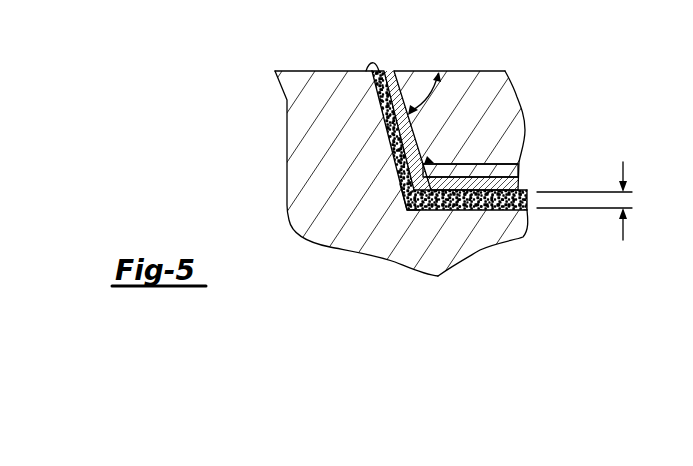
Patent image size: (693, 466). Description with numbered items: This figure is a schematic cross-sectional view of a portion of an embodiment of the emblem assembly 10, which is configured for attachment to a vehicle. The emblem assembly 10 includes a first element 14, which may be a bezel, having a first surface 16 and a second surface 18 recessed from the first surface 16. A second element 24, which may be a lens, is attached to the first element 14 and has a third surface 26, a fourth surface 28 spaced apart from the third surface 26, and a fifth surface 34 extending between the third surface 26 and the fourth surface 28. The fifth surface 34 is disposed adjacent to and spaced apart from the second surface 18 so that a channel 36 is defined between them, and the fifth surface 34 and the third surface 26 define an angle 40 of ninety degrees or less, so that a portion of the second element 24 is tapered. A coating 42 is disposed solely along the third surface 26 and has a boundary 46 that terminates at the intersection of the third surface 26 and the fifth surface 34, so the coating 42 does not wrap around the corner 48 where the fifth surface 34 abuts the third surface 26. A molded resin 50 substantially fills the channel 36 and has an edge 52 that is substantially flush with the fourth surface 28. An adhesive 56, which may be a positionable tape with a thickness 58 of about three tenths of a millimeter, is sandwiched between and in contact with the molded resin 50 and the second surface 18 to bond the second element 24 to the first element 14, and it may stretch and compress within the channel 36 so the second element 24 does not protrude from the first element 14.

The emblem assembly 10 is at (245, 62).
The first element 14 is at (287, 183).
The first surface 16 is at (317, 71).
The second surface 18 is at (394, 131).
The second element 24 is at (519, 95).
The third surface 26 is at (501, 169).
The fourth surface 28 is at (469, 71).
The fifth surface 34 is at (414, 146).
The channel 36 is at (387, 62).
The angle 40 is at (411, 111).
The coating 42 is at (519, 166).
The boundary 46 is at (407, 166).
The corner 48 is at (429, 160).
The molded resin 50 is at (520, 188).
The edge 52 is at (371, 74).
The adhesive 56 is at (528, 205).
The thickness 58 is at (624, 176).